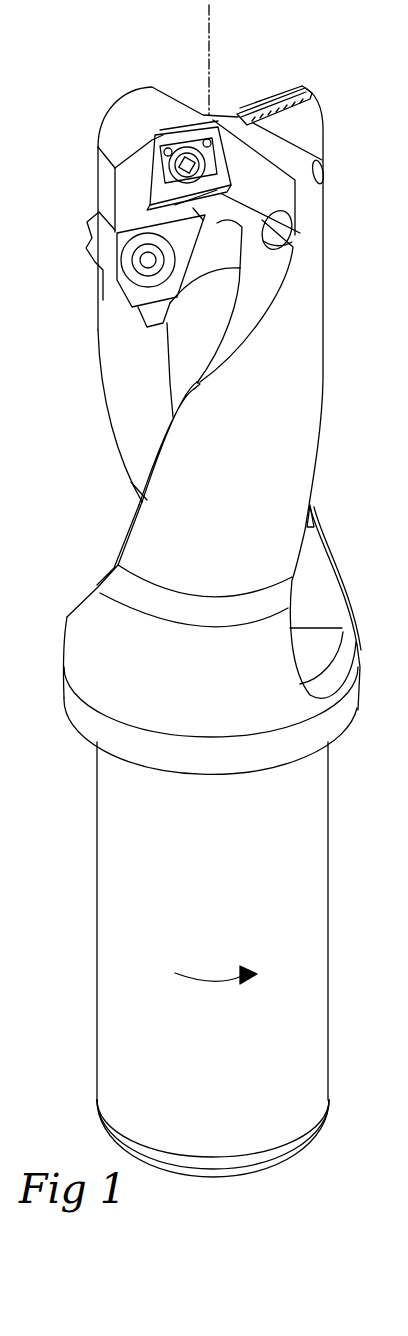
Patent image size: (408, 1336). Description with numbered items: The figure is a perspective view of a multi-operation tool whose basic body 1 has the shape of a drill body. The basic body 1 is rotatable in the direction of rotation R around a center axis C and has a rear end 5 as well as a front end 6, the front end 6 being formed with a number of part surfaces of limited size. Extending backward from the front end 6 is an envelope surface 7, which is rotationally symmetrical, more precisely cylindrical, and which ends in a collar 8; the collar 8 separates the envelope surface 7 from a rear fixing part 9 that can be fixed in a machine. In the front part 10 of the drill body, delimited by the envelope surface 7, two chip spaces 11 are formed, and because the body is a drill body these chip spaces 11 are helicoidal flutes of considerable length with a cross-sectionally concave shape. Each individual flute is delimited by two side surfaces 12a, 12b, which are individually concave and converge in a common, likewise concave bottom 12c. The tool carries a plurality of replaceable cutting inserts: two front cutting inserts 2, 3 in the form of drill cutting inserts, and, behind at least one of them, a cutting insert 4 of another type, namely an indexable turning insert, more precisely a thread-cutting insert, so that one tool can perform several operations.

The basic body 1 is at (366, 589).
The front cutting insert 2 is at (165, 186).
The front cutting insert 3 is at (273, 103).
The cutting insert 4 is at (124, 296).
The rear end 5 is at (101, 1131).
The front end 6 is at (148, 105).
The envelope surface 7 is at (251, 509).
The collar 8 is at (345, 713).
The rear fixing part 9 is at (330, 887).
The front part 10 is at (323, 291).
The chip space 11 is at (145, 442).
The side surface 12a is at (156, 388).
The side surface 12b is at (217, 349).
The bottom 12c is at (224, 325).
The center axis C is at (211, 55).
The direction of rotation R is at (216, 989).